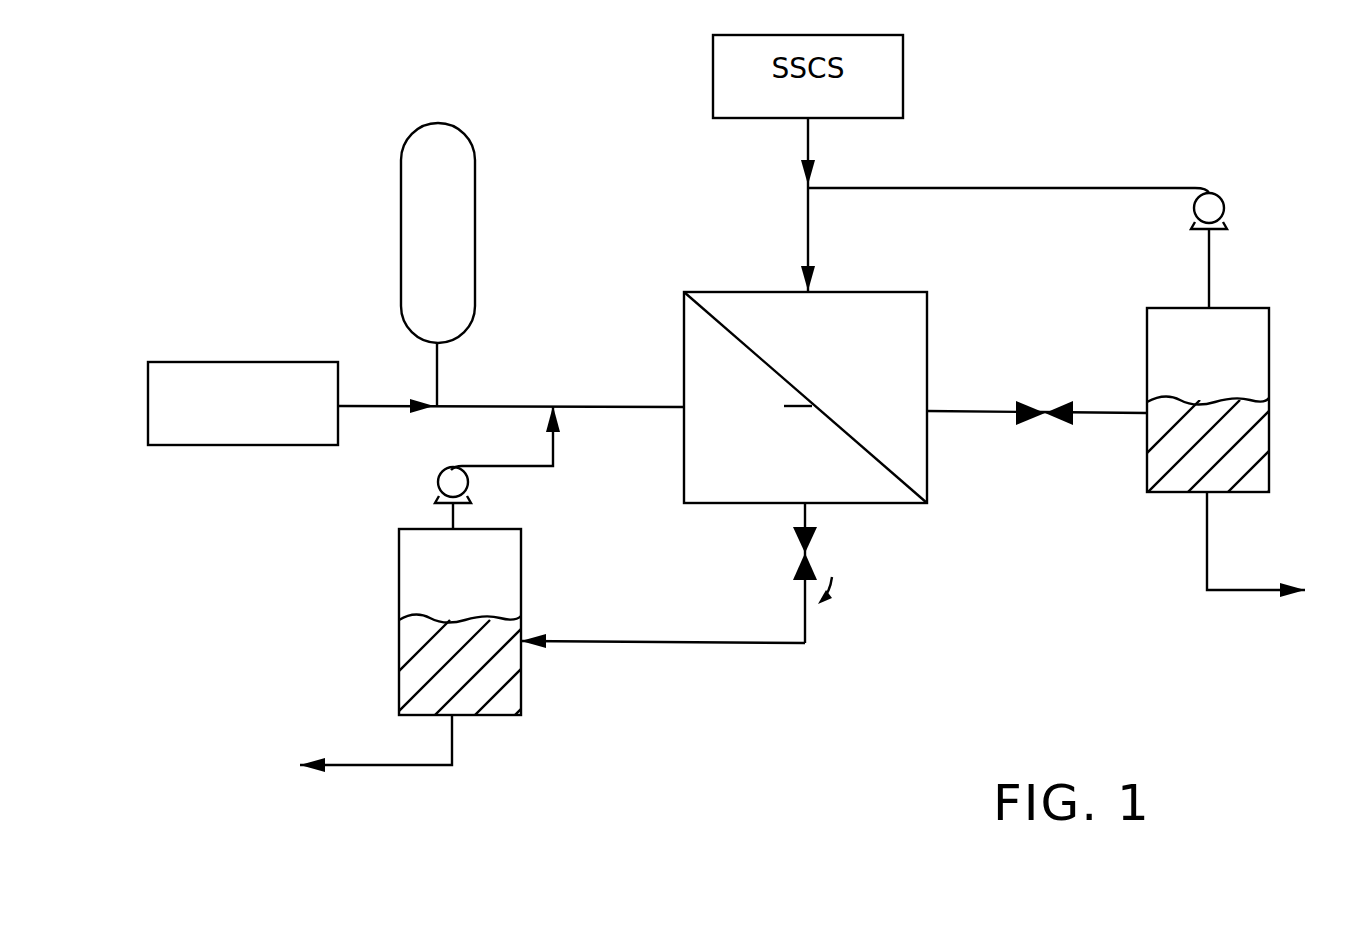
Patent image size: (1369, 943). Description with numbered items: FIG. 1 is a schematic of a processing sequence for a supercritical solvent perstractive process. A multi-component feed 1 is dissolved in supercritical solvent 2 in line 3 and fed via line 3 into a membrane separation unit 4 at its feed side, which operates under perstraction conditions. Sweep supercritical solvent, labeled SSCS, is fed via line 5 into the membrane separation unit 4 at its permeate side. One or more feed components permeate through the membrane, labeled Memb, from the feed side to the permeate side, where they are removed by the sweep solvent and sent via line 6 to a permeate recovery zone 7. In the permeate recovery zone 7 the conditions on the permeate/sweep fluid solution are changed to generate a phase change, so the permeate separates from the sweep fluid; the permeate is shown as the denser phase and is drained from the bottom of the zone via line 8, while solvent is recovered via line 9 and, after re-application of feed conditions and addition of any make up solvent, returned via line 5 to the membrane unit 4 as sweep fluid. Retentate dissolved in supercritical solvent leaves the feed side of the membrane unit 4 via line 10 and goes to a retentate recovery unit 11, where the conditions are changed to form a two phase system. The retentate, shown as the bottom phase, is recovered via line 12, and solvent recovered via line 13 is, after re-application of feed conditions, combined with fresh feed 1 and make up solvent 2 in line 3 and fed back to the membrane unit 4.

The multi-component feed 1 is at (472, 212).
The supercritical solvent 2 is at (172, 362).
The line 3 is at (475, 406).
The membrane separation unit 4 is at (890, 292).
The line 5 is at (878, 188).
The line 6 is at (1098, 414).
The permeate recovery zone 7 is at (1269, 440).
The line 8 is at (1243, 592).
The line 9 is at (1209, 290).
The line 10 is at (807, 517).
The retentate recovery unit 11 is at (521, 572).
The line 12 is at (408, 765).
The line 13 is at (453, 515).